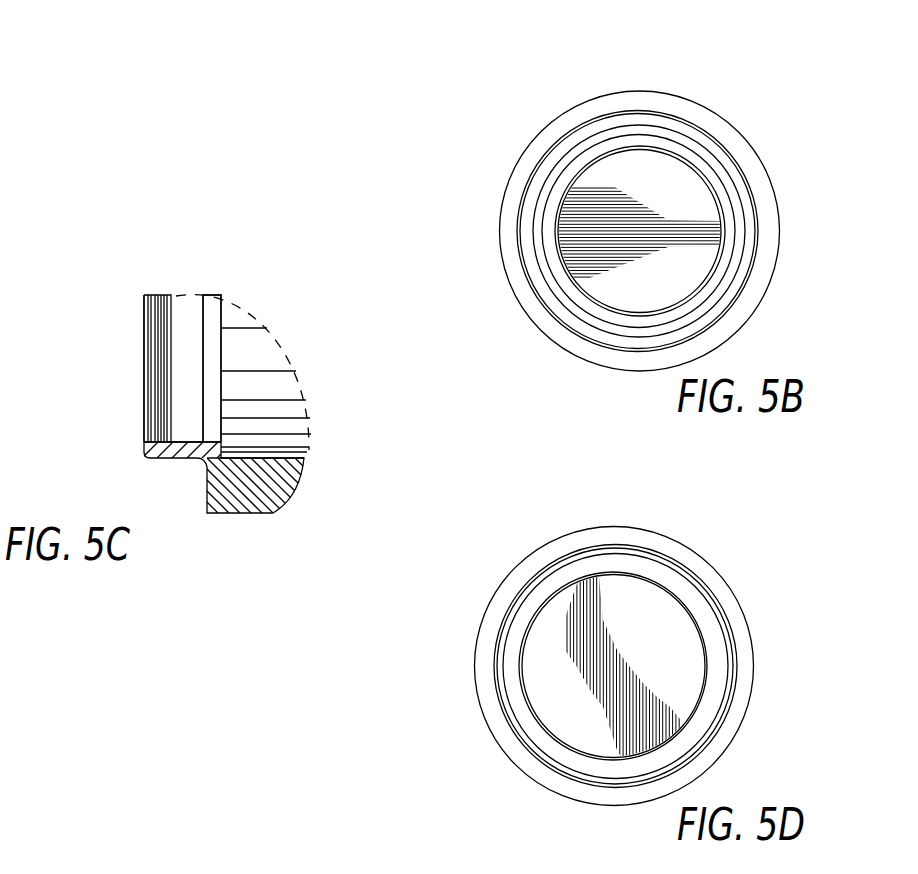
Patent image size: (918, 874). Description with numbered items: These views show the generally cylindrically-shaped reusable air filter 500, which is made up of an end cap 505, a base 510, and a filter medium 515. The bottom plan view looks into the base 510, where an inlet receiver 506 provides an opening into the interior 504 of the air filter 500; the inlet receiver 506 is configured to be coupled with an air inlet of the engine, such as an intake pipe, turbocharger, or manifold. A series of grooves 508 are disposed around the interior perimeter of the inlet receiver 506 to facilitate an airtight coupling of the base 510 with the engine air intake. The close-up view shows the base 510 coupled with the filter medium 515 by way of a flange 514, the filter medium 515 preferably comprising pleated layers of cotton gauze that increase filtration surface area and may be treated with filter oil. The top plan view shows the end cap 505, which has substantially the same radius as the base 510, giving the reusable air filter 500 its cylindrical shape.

In FIG. 5B, the reusable air filter 500 is at (587, 66).
In FIG. 5D, the reusable air filter 500 is at (547, 516).
In FIG. 5C, the reusable air filter 500 is at (139, 266).
In FIG. 5B, the interior 504 is at (643, 183).
In FIG. 5C, the interior 504 is at (283, 380).
In FIG. 5D, the end cap 505 is at (588, 722).
In FIG. 5B, the inlet receiver 506 is at (682, 268).
In FIG. 5C, the inlet receiver 506 is at (188, 339).
In FIG. 5C, the grooves 508 is at (155, 408).
In FIG. 5B, the base 510 is at (530, 312).
In FIG. 5C, the base 510 is at (194, 315).
In FIG. 5C, the flange 514 is at (205, 489).
In FIG. 5C, the filter medium 515 is at (279, 489).